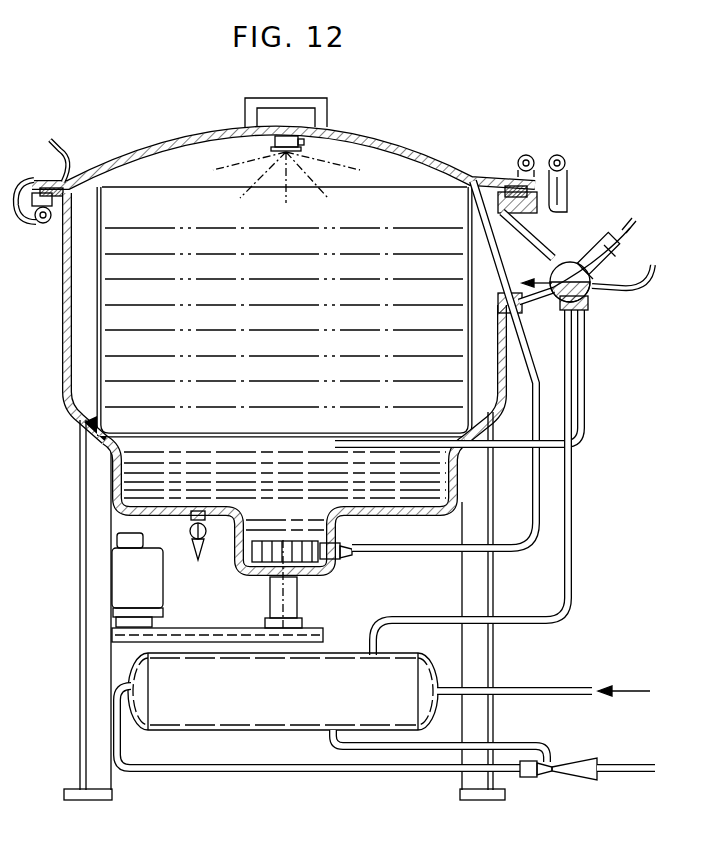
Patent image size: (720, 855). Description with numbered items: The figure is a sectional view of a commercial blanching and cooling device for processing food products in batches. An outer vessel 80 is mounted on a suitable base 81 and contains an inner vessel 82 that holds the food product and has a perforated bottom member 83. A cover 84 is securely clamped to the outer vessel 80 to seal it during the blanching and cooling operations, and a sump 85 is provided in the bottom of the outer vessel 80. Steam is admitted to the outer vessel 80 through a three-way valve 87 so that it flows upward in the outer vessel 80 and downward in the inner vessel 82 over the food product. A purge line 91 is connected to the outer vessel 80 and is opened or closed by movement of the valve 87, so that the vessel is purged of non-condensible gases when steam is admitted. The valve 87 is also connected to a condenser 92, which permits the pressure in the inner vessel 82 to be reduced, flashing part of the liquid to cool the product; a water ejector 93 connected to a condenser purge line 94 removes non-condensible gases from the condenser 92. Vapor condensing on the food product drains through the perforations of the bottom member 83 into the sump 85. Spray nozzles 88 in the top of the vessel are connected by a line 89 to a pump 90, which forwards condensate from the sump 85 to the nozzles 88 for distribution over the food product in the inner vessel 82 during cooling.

The outer vessel 80 is at (65, 310).
The base 81 is at (96, 612).
The inner vessel 82 is at (97, 260).
The perforated bottom member 83 is at (165, 445).
The cover 84 is at (436, 153).
The sump 85 is at (137, 488).
The three-way valve 87 is at (570, 262).
The spray nozzles 88 is at (270, 147).
The line 89 is at (432, 160).
The pump 90 is at (305, 555).
The purge line 91 is at (584, 364).
The condenser 92 is at (389, 691).
The water ejector 93 is at (558, 768).
The condenser purge line 94 is at (332, 741).